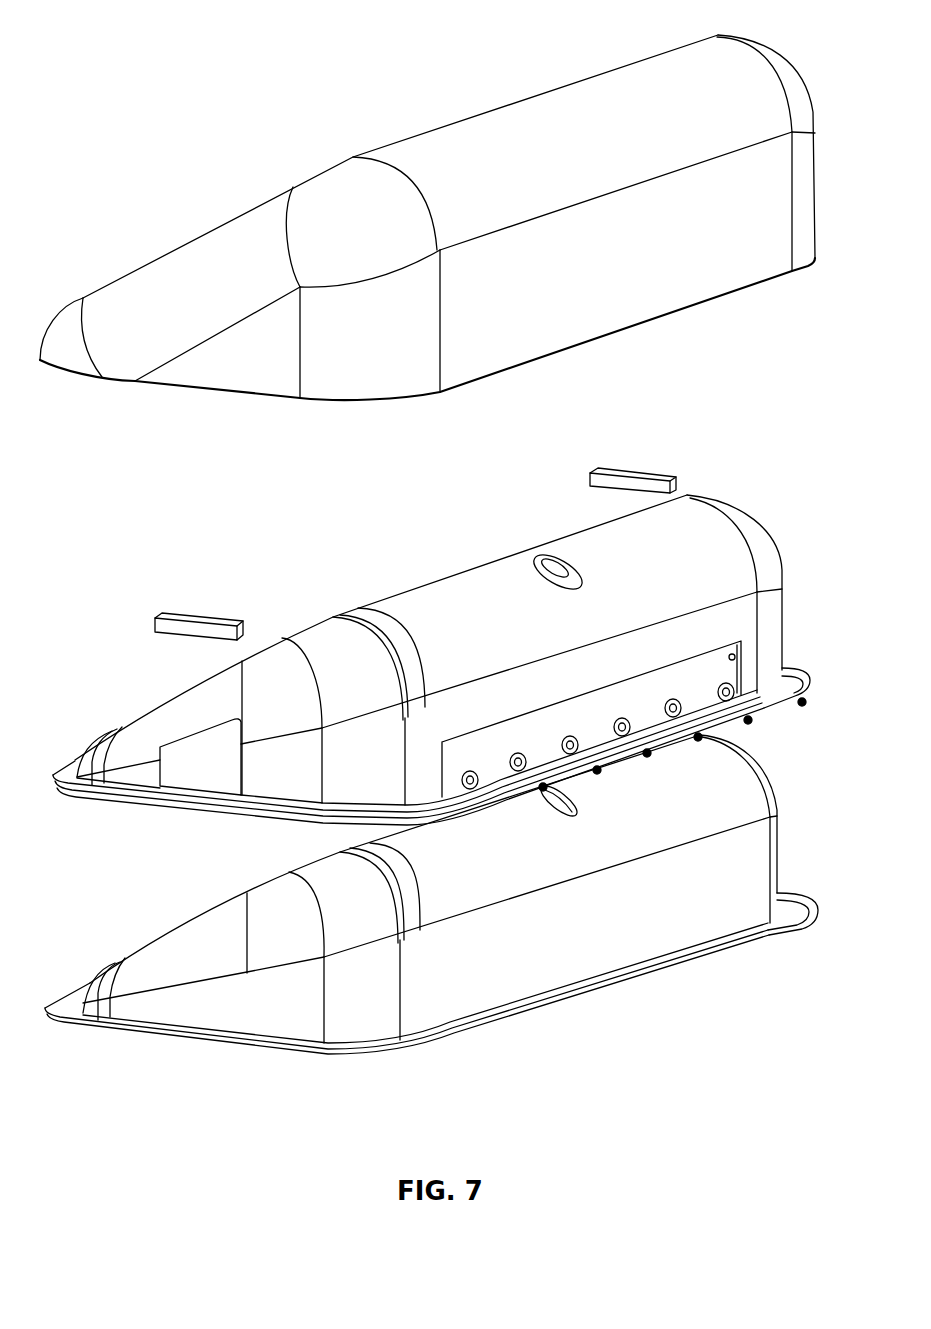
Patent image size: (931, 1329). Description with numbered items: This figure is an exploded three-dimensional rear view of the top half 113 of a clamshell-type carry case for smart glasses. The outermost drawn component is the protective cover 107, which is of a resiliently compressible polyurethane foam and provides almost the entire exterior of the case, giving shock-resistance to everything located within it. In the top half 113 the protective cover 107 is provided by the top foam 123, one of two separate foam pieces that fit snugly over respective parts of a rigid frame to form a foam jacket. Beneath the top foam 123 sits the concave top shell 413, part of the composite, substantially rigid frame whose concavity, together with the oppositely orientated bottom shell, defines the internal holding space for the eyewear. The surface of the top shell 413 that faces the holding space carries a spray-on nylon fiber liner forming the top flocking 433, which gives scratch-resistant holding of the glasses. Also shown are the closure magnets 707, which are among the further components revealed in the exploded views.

The top half 113 is at (121, 48).
The protective cover 107 is at (653, 266).
The top foam 123 is at (748, 87).
The top shell 413 is at (757, 542).
The closure magnets 707 is at (210, 613).
The top flocking 433 is at (620, 942).